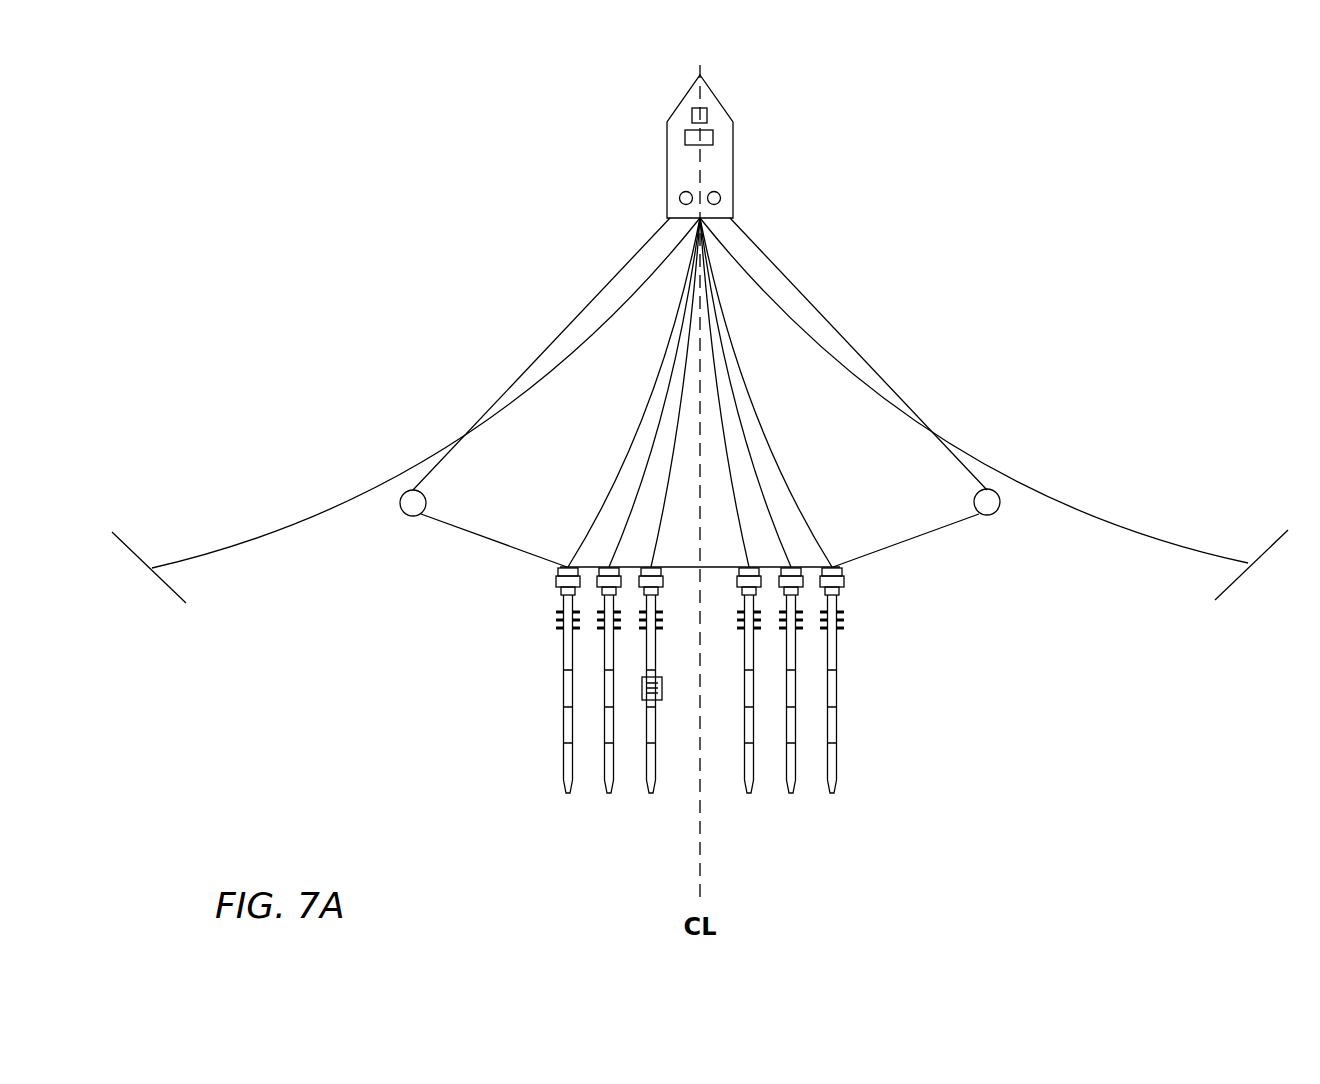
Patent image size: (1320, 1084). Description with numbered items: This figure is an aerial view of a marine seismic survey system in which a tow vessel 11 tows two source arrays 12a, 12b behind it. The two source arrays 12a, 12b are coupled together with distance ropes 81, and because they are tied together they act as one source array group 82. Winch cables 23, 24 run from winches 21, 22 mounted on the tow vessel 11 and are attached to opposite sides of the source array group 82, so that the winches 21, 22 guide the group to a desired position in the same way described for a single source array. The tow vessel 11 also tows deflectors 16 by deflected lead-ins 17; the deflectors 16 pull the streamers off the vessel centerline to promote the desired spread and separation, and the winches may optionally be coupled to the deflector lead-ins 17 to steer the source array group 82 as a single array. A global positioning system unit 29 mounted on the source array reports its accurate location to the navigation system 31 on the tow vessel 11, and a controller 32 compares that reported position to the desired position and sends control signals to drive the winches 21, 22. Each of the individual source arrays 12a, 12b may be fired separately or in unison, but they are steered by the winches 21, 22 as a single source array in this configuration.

The tow vessel 11 is at (683, 100).
The navigation system 31 is at (707, 114).
The controller 32 is at (713, 138).
The winch 21 is at (681, 202).
The winch 22 is at (719, 202).
The winch cable 23 is at (562, 330).
The winch cable 24 is at (838, 330).
The deflected lead-in 17 is at (297, 522).
The deflector 16 is at (123, 540).
The distance rope 81 is at (693, 567).
The source array group 82 is at (618, 828).
The source array 12a is at (566, 812).
The source array 12b is at (840, 812).
The global positioning system (GPS) unit 29 is at (642, 688).